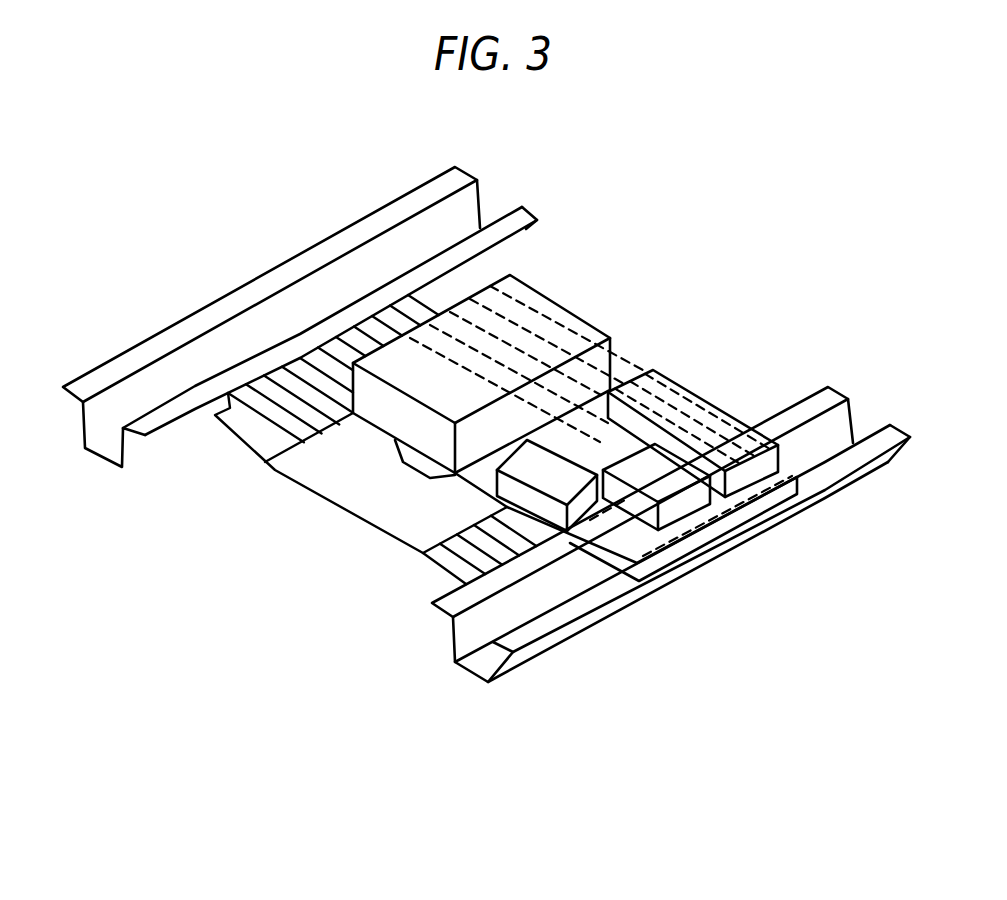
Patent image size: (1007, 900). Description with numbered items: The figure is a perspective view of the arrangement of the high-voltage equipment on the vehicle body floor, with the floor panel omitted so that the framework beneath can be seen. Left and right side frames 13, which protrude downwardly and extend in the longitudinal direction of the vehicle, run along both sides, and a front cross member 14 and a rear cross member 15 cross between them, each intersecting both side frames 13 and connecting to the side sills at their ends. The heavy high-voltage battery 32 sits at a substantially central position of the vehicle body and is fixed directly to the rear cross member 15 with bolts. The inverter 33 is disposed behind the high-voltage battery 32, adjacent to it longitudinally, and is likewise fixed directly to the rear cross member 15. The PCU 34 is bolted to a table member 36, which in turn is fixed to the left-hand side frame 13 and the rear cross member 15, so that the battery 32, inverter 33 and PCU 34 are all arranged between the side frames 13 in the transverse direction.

The side frame 13 is at (104, 468).
The cross member 14 is at (227, 455).
The cross member 15 is at (470, 290).
The high-voltage battery 32 is at (372, 347).
The inverter 33 is at (577, 311).
The PCU (power control unit) 34 is at (706, 382).
The table member 36 is at (601, 562).